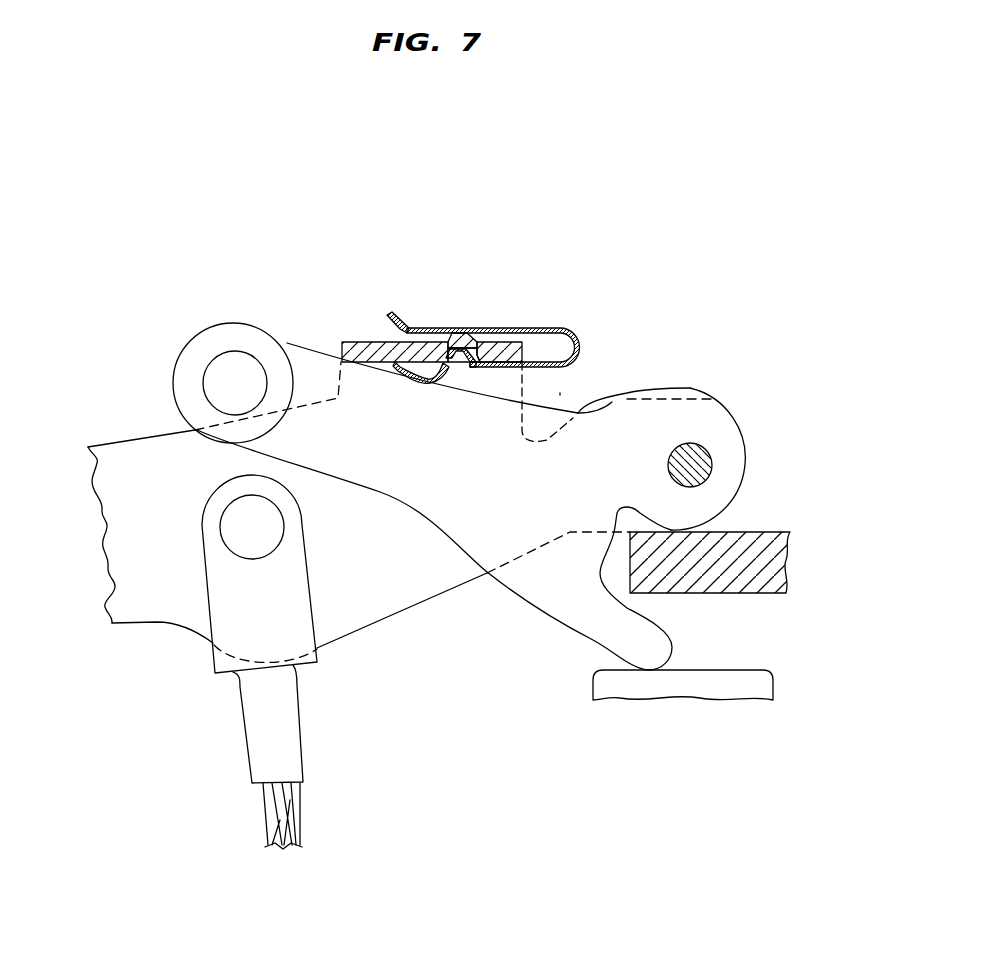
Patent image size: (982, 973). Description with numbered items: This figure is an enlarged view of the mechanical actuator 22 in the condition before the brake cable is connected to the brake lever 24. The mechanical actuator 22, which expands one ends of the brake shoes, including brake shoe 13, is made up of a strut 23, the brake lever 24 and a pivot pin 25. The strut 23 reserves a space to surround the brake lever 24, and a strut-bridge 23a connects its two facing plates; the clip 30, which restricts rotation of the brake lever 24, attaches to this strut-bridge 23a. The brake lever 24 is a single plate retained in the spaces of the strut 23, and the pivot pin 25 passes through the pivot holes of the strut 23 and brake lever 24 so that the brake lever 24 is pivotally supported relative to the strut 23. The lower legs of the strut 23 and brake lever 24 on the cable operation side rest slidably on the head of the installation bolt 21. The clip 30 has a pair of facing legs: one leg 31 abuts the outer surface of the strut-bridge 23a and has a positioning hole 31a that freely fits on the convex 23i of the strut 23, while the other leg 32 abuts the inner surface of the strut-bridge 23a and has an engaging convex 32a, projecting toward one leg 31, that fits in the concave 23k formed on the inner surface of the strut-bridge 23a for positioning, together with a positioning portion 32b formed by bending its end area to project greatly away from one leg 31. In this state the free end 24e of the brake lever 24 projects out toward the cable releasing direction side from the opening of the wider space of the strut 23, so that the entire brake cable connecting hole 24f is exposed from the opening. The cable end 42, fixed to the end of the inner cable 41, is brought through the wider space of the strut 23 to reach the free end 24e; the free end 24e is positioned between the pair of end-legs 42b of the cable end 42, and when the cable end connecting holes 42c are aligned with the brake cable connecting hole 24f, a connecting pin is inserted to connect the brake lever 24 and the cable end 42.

The brake shoe 13 is at (795, 558).
The installation bolt 21 is at (775, 690).
The mechanical actuator 22 is at (533, 302).
The strut 23 is at (127, 437).
The strut-bridge 23a is at (372, 342).
The convex 23i is at (448, 338).
The concave 23k is at (460, 367).
The brake lever 24 is at (430, 470).
The free end 24e is at (180, 355).
The brake cable connecting hole 24f is at (234, 352).
The pivot pin 25 is at (707, 462).
The clip 30 is at (521, 455).
The one leg 31 is at (483, 317).
The positioning hole 31a is at (500, 328).
The other leg 32 is at (488, 465).
The engaging convex 32a is at (477, 343).
The positioning portion 32b is at (443, 383).
The inner cable 41 is at (265, 810).
The cable end 42 is at (181, 629).
The end-leg 42b is at (213, 593).
The cable end connecting hole 42c is at (233, 522).